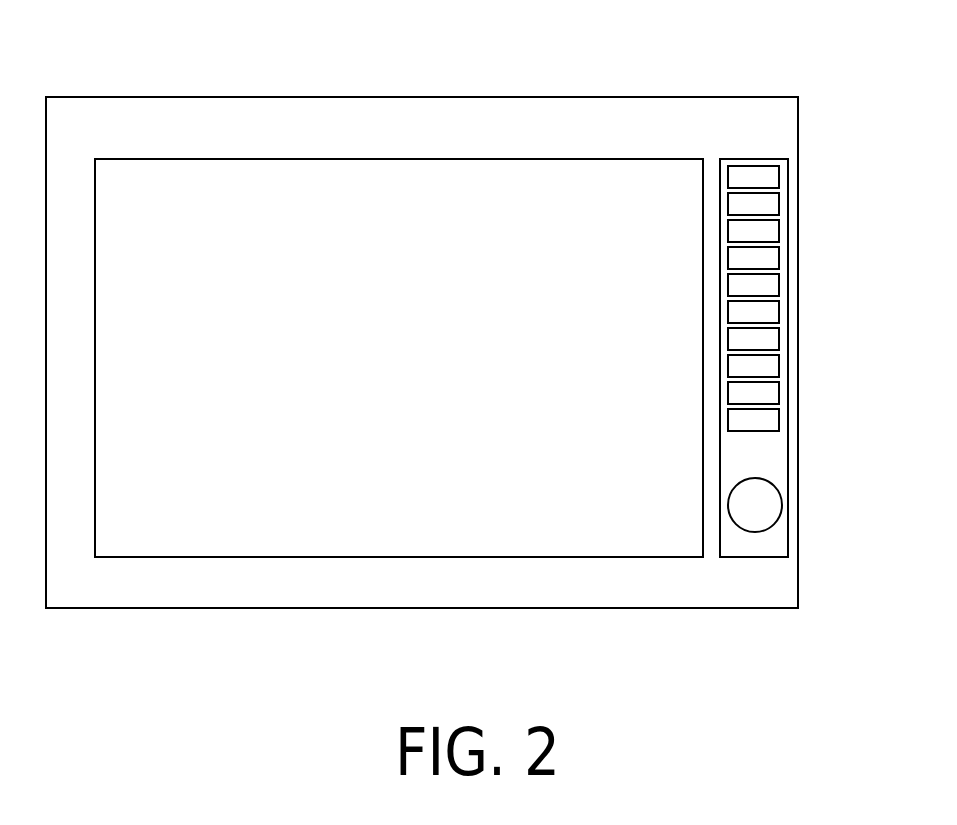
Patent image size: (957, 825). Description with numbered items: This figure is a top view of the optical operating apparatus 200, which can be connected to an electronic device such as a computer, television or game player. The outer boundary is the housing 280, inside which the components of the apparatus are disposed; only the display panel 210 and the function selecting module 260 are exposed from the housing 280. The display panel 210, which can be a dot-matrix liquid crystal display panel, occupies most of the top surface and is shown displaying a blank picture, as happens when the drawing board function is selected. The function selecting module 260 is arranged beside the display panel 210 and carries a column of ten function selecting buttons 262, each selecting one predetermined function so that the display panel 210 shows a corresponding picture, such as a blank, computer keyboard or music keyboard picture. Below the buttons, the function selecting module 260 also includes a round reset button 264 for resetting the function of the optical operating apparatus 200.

The optical operating apparatus 200 is at (675, 671).
The display panel 210 is at (260, 158).
The function selecting module 260 is at (788, 460).
The function selecting buttons 262 is at (776, 180).
The reset button 264 is at (773, 505).
The housing 280 is at (799, 570).